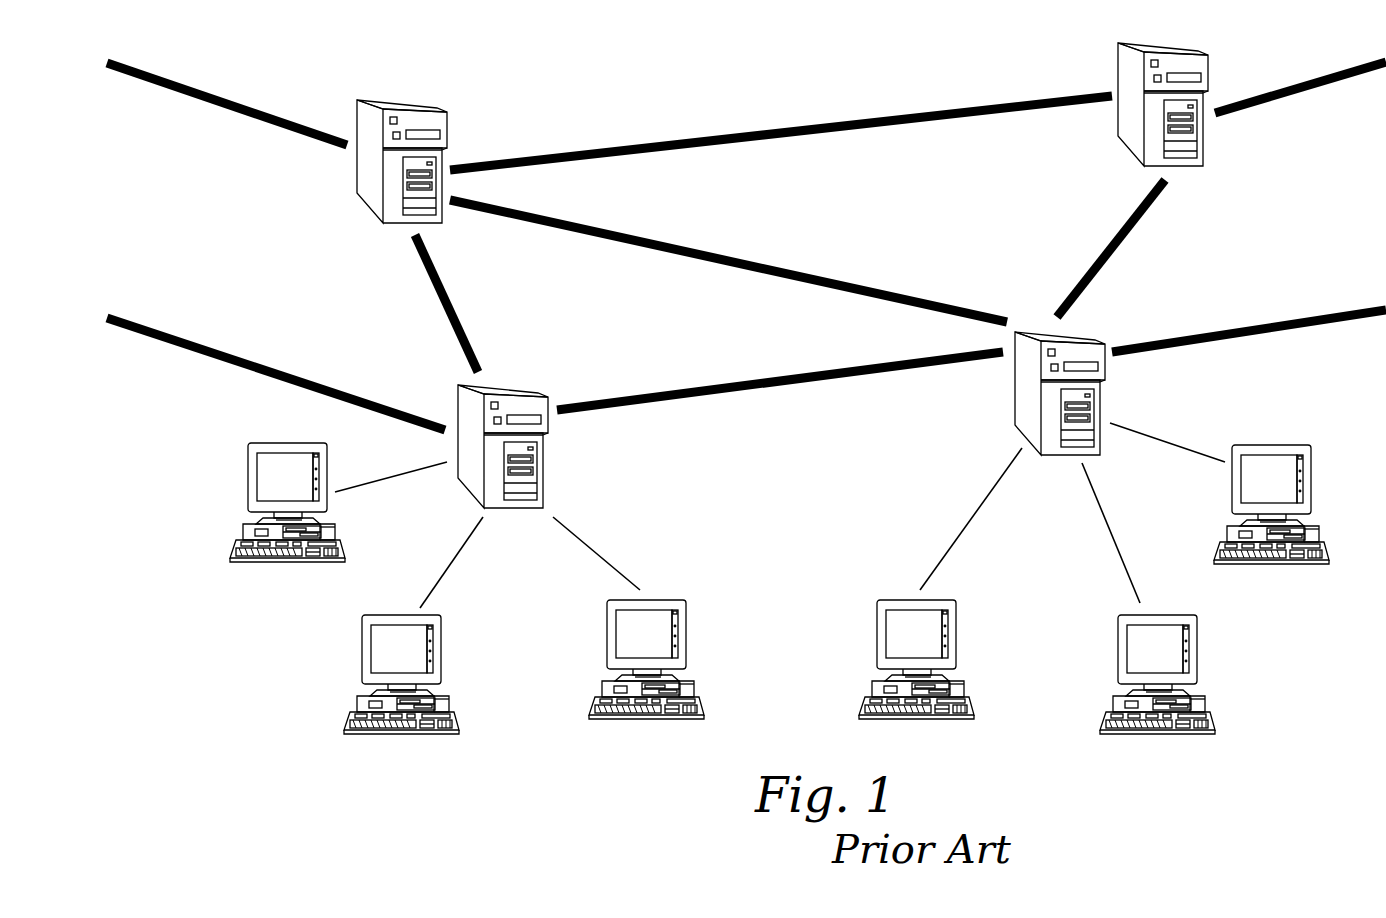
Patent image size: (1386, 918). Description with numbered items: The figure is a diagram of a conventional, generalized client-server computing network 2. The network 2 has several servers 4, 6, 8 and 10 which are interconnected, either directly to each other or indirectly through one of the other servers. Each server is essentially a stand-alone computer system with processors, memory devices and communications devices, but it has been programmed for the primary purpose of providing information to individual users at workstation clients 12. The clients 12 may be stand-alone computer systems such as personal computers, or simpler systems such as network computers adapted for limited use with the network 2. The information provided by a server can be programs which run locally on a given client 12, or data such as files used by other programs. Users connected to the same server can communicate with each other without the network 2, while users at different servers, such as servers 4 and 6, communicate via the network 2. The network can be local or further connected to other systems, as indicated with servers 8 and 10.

The client-server computing network 2 is at (270, 723).
The server 4 is at (542, 458).
The server 6 is at (1027, 396).
The server 8 is at (372, 163).
The server 10 is at (1120, 45).
The workstation client 12 is at (418, 735).